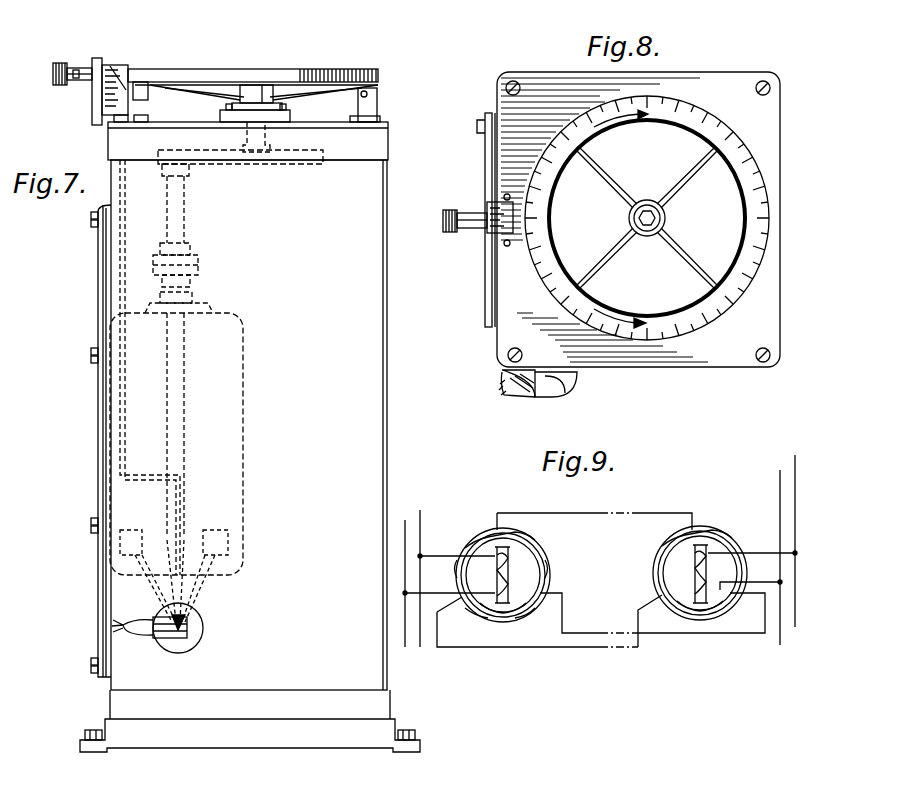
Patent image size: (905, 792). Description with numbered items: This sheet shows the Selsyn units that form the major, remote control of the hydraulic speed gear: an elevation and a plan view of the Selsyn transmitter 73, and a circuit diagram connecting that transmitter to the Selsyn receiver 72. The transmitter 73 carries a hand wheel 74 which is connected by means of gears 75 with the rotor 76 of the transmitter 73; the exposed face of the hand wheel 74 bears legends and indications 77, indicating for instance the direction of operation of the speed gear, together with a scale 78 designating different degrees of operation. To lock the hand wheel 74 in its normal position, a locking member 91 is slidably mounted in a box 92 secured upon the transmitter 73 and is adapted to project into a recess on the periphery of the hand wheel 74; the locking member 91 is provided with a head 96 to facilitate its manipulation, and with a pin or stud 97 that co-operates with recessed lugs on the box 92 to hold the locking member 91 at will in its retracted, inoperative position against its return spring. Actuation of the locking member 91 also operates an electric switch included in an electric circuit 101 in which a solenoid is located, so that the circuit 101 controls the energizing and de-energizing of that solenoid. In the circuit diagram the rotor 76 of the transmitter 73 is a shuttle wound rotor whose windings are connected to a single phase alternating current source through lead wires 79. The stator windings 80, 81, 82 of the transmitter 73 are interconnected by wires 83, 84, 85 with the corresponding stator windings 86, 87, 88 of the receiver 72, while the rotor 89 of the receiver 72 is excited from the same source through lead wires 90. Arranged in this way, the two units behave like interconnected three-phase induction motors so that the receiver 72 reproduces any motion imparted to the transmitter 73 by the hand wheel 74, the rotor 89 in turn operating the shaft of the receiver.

In FIG. 9, the Selsyn receiver 72 is at (547, 558).
In FIG. 7, the Selsyn transmitter 73 is at (244, 405).
In FIG. 9, the Selsyn transmitter 73 is at (700, 540).
In FIG. 7, the hand wheel 74 is at (224, 68).
In FIG. 8, the hand wheel 74 is at (745, 286).
In FIG. 7, the gears 75 is at (215, 170).
In FIG. 7, the rotor 76 is at (184, 458).
In FIG. 9, the rotor 76 is at (700, 603).
In FIG. 8, the legends and indications 77 is at (618, 128).
In FIG. 8, the scale 78 is at (725, 324).
In FIG. 9, the lead wires 79 is at (780, 470).
In FIG. 9, the stator winding 80 is at (668, 536).
In FIG. 9, the stator winding 81 is at (722, 612).
In FIG. 9, the stator winding 82 is at (735, 585).
In FIG. 9, the wire 83 is at (668, 634).
In FIG. 9, the wire 84 is at (650, 513).
In FIG. 9, the wire 85 is at (573, 647).
In FIG. 9, the stator winding 86 is at (523, 617).
In FIG. 9, the stator winding 87 is at (527, 535).
In FIG. 9, the stator winding 88 is at (480, 533).
In FIG. 9, the rotor 89 is at (505, 602).
In FIG. 9, the lead wires 90 is at (420, 510).
In FIG. 7, the locking member 91 is at (79, 68).
In FIG. 7, the box 92 is at (116, 72).
In FIG. 8, the box 92 is at (490, 214).
In FIG. 7, the head 96 is at (55, 82).
In FIG. 8, the head 96 is at (446, 238).
In FIG. 7, the pin or stud 97 is at (77, 80).
In FIG. 7, the electric circuit 101 is at (125, 415).